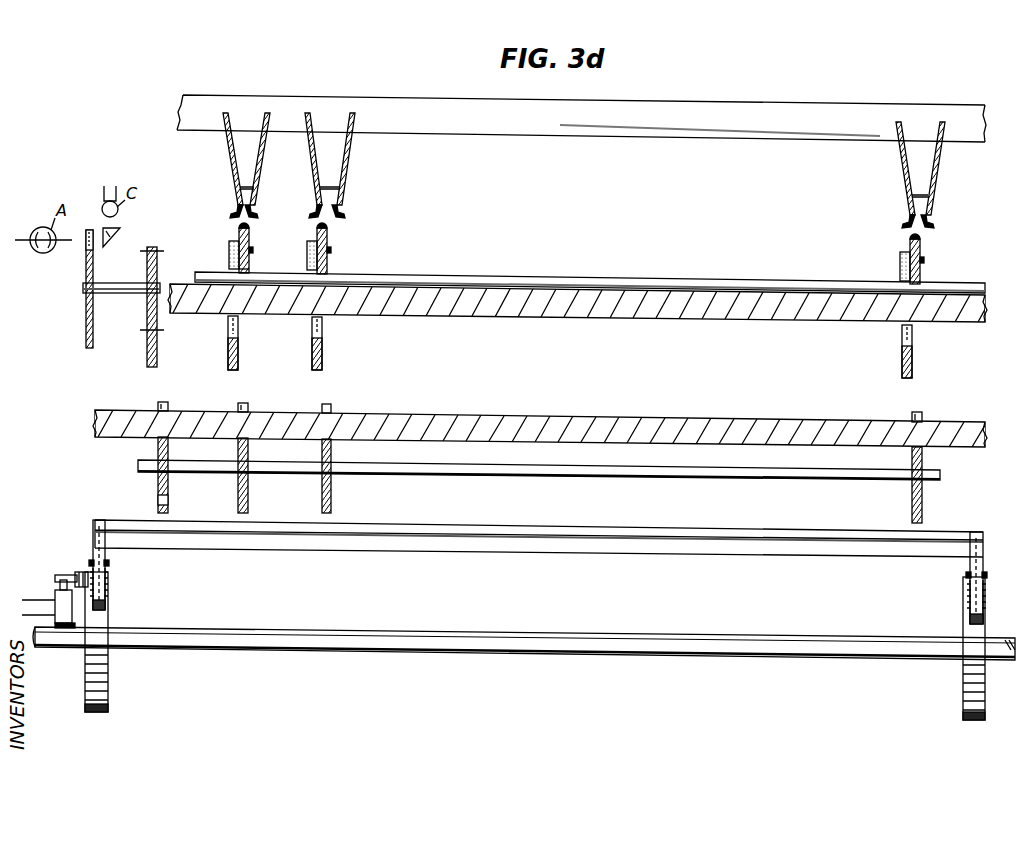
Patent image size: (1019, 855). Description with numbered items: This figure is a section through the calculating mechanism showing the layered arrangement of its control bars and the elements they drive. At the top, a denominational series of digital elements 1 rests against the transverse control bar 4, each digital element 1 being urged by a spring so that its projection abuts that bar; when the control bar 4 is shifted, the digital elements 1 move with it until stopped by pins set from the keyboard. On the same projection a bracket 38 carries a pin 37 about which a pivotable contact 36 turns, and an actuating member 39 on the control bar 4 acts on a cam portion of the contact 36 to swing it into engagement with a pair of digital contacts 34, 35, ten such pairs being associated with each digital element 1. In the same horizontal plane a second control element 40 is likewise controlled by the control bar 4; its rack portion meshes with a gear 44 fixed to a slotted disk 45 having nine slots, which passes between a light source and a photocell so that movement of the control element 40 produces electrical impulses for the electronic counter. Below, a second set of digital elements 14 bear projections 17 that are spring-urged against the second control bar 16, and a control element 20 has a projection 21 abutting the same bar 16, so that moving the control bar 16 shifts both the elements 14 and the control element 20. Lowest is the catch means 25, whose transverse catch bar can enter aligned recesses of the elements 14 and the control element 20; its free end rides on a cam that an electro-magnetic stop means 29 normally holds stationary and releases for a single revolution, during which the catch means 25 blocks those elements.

The digital element 1 is at (239, 344).
The transverse control bar 4 is at (462, 303).
The digital element 14 is at (248, 488).
The second control bar 16 is at (505, 430).
The projection 17 is at (248, 406).
The control element 20 is at (168, 482).
The projection 21 is at (158, 405).
The catch means 25 is at (199, 535).
The electro-magnetic stop means 29 is at (57, 590).
The digital contact 34 is at (308, 160).
The digital contact 35 is at (347, 170).
The pivotable contact 36 is at (250, 234).
The pin 37 is at (254, 250).
The bracket 38 is at (228, 252).
The actuating member 39 is at (426, 280).
The second control element 40 is at (157, 348).
The gear 44 is at (158, 270).
The slotted disk 45 is at (93, 316).